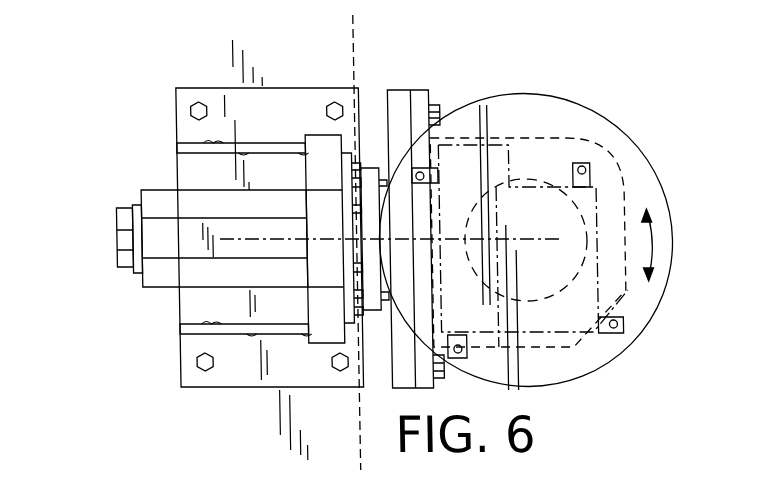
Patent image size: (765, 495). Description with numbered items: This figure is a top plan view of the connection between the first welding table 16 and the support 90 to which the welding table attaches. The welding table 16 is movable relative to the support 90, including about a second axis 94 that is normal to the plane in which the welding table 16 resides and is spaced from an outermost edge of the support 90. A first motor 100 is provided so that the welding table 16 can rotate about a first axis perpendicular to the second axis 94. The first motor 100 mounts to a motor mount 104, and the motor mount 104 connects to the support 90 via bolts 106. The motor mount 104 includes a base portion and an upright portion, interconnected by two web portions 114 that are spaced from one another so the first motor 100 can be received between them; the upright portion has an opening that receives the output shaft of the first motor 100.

The first welding table 16 is at (628, 155).
The support 90 is at (336, 49).
The second axis 94 is at (528, 243).
The first motor 100 is at (153, 276).
The motor mount 104 is at (257, 390).
The bolts 106 is at (196, 363).
The web portions 114 is at (179, 147).